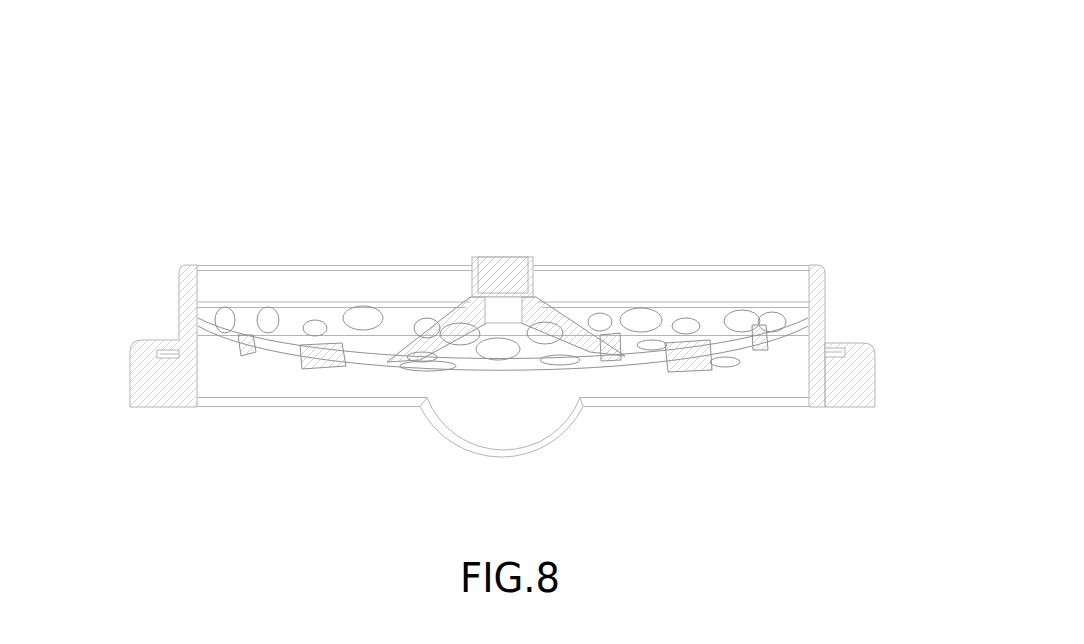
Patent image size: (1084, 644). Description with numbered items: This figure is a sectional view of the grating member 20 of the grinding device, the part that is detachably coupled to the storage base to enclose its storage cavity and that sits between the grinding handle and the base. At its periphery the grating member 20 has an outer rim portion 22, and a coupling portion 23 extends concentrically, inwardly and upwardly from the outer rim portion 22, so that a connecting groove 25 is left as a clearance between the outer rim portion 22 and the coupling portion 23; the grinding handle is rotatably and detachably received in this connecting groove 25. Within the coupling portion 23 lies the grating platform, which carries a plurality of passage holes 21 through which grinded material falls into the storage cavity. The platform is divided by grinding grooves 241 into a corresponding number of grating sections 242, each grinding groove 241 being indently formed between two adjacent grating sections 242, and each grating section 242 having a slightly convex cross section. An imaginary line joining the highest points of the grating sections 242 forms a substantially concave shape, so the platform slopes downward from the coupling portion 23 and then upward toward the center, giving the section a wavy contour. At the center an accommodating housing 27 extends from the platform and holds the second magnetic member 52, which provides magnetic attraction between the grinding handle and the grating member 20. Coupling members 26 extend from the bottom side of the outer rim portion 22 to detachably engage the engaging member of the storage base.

The grating member 20 is at (856, 375).
The passage holes 21 is at (636, 316).
The outer rim portion 22 is at (842, 410).
The coupling portion 23 is at (177, 281).
The connecting groove 25 is at (838, 327).
The coupling members 26 is at (436, 423).
The accommodating housing 27 is at (536, 262).
The second magnetic member 52 is at (495, 270).
The grinding grooves 241 is at (245, 334).
The grating sections 242 is at (338, 343).